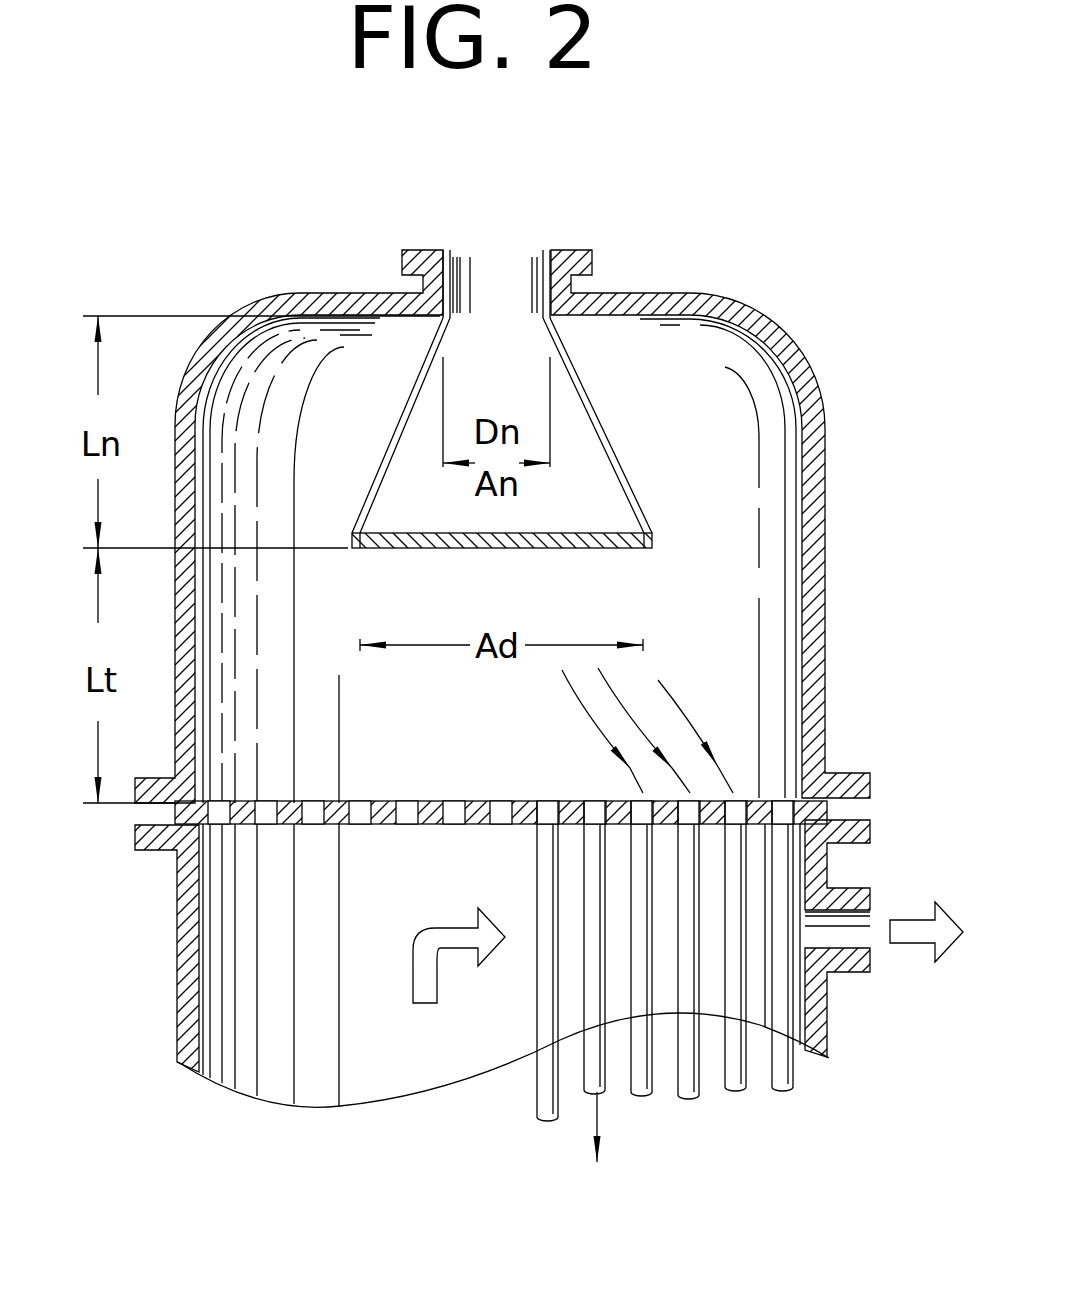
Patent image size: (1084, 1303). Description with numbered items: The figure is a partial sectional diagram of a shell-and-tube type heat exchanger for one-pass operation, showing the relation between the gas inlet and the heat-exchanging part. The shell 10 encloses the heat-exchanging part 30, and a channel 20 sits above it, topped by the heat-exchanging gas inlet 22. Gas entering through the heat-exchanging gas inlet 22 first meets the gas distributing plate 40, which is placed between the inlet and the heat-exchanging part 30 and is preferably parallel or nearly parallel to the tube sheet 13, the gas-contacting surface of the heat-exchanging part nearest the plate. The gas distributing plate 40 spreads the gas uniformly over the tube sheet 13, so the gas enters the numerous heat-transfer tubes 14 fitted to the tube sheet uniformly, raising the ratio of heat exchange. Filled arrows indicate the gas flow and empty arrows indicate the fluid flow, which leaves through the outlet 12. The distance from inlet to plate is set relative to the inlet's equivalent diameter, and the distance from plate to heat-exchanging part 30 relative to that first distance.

The shell 10 is at (180, 1013).
The outlet 12 is at (870, 935).
The tube sheet 13 is at (380, 826).
The heat-transfer tube 14 is at (690, 1095).
The channel 20 is at (813, 595).
The heat-exchanging gas inlet 22 is at (522, 290).
The heat-exchanging part 30 is at (245, 930).
The gas distributing plate 40 is at (596, 535).